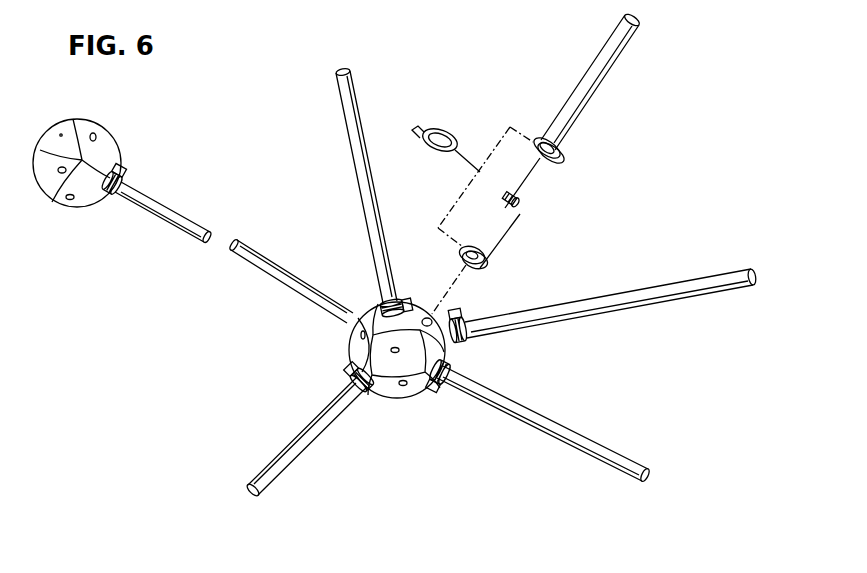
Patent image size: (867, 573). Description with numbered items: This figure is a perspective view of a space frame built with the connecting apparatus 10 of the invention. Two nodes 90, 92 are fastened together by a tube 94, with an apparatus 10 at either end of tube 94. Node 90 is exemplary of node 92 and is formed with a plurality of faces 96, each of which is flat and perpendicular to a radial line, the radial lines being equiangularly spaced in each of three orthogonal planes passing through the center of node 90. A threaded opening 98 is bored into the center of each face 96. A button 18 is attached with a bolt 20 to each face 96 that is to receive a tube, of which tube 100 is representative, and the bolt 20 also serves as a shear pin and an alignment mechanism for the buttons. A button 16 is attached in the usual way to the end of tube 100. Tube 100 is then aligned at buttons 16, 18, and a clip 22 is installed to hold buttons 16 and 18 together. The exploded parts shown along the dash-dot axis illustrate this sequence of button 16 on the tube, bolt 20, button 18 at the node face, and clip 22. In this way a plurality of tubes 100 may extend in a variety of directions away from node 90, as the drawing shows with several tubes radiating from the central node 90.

The interconnecting apparatus 10 is at (125, 164).
The first button 16 is at (556, 162).
The second button 18 is at (485, 263).
The bolt 20 is at (522, 204).
The clip 22 is at (417, 124).
The node 90 is at (340, 341).
The node 92 is at (98, 128).
The tube 94 is at (166, 214).
The face 96 is at (403, 388).
The threaded opening 98 is at (428, 316).
The tube 100 is at (592, 68).